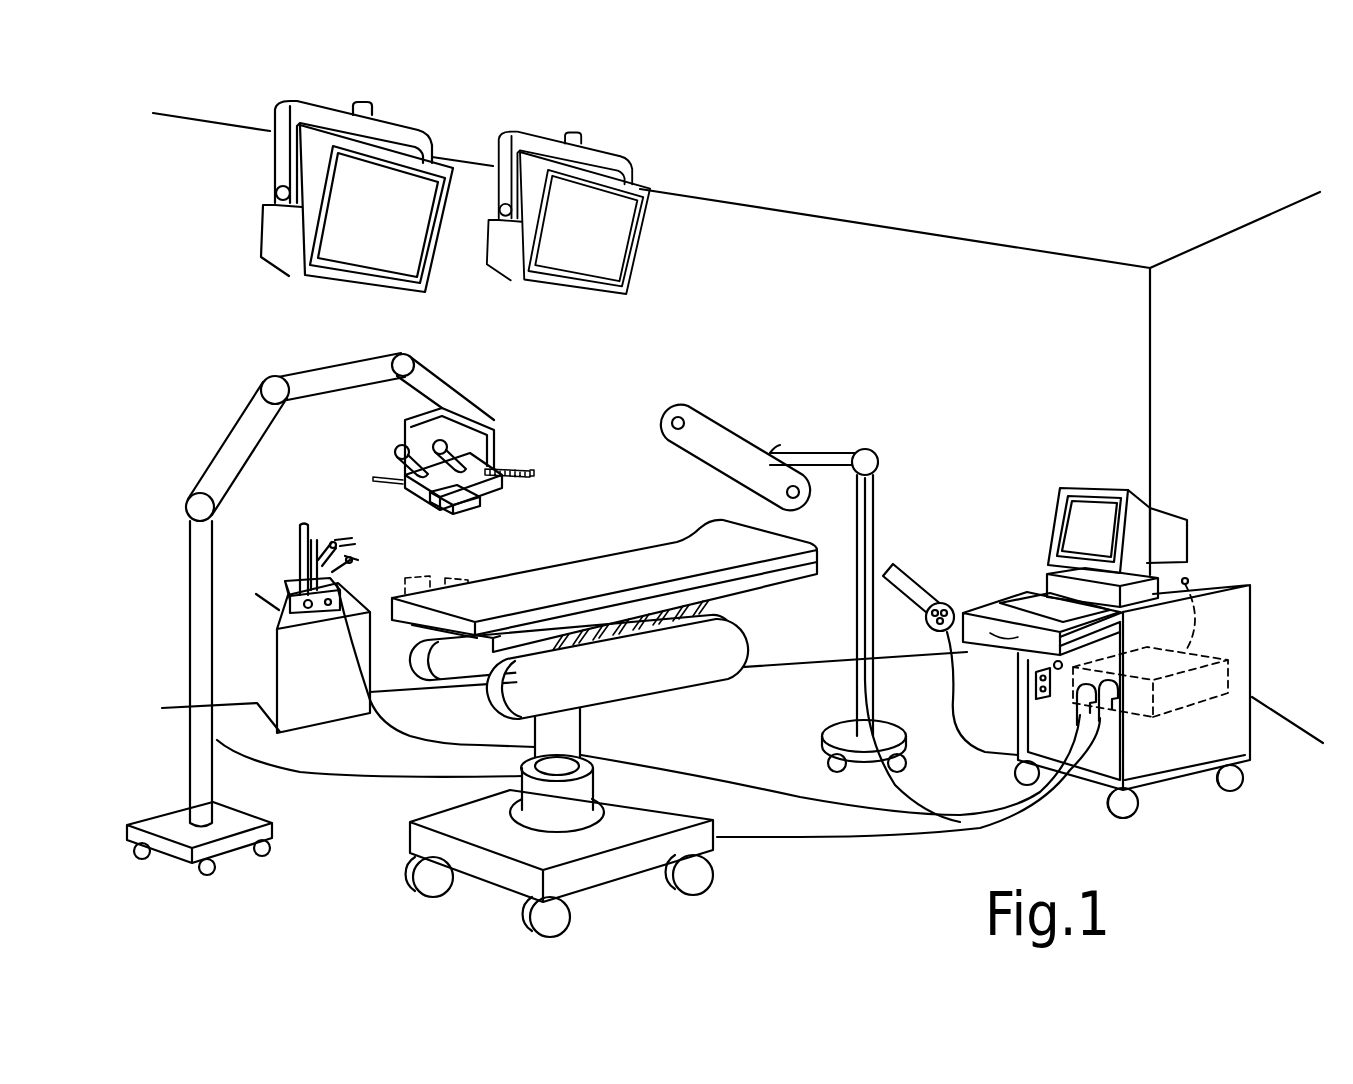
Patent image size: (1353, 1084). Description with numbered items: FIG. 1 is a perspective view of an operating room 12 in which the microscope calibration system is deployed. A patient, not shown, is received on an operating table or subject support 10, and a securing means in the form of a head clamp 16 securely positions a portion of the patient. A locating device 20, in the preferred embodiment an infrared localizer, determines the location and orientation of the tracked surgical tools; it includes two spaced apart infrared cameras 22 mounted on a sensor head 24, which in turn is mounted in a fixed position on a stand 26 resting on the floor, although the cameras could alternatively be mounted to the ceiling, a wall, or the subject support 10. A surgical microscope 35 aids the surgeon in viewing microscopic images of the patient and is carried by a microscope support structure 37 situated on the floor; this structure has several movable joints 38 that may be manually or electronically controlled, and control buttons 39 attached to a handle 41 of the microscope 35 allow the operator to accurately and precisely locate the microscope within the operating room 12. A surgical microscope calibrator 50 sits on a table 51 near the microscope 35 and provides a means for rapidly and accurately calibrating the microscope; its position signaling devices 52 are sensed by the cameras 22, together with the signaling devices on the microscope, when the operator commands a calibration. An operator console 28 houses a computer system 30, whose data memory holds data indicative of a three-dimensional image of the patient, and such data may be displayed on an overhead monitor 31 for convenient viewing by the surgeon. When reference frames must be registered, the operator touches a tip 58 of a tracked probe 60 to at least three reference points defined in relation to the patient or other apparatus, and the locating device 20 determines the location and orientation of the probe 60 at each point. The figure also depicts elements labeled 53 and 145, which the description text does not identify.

The subject support 10 is at (665, 562).
The operating room 12 is at (1011, 327).
The head clamp 16 is at (482, 596).
The locating device 20 is at (824, 531).
The infrared cameras 22 is at (680, 415).
The sensor head 24 is at (742, 420).
The stand 26 is at (900, 485).
The operator console 28 is at (998, 612).
The computer system 30 is at (1097, 490).
The overhead monitor 31 is at (555, 268).
The surgical microscope 35 is at (507, 487).
The microscope support structure 37 is at (327, 367).
The movable joints 38 is at (273, 388).
The control buttons 39 is at (510, 468).
The handle 41 is at (378, 478).
The surgical microscope calibrator 50 is at (283, 568).
The table 51 is at (280, 610).
The position signaling devices 52 is at (355, 545).
The controller unit 53 is at (1213, 682).
The tip 58 is at (886, 568).
The probe 60 is at (915, 580).
The camera lenses 145 is at (440, 443).